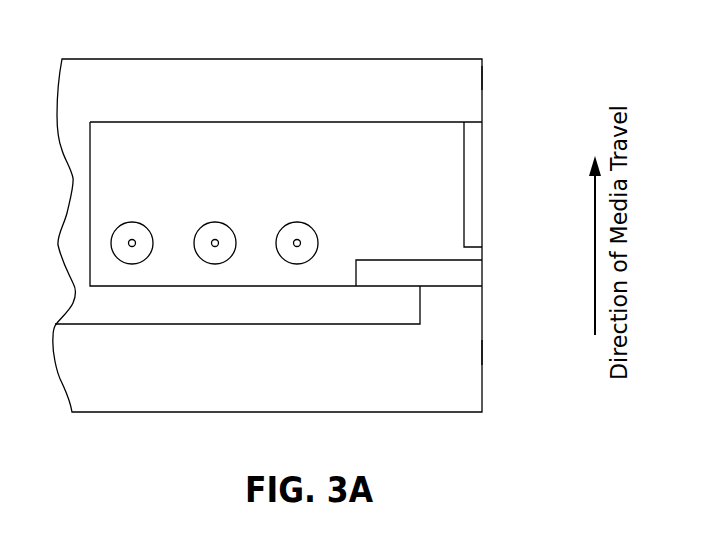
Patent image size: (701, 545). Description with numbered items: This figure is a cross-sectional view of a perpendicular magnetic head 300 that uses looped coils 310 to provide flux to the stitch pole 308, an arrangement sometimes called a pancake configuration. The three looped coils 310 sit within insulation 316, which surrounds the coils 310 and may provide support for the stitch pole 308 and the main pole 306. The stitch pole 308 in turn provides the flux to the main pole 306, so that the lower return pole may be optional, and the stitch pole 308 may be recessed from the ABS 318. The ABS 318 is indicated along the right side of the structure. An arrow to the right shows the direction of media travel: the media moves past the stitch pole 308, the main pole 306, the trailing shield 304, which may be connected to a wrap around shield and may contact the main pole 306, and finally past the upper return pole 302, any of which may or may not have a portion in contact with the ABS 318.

The perpendicular magnetic head 300 is at (142, 28).
The upper return pole 302 is at (373, 98).
The trailing shield 304 is at (484, 163).
The main pole 306 is at (484, 270).
The stitch pole 308 is at (306, 316).
The looped coils 310 is at (128, 222).
The insulation 316 is at (418, 211).
The ABS 318 is at (493, 78).